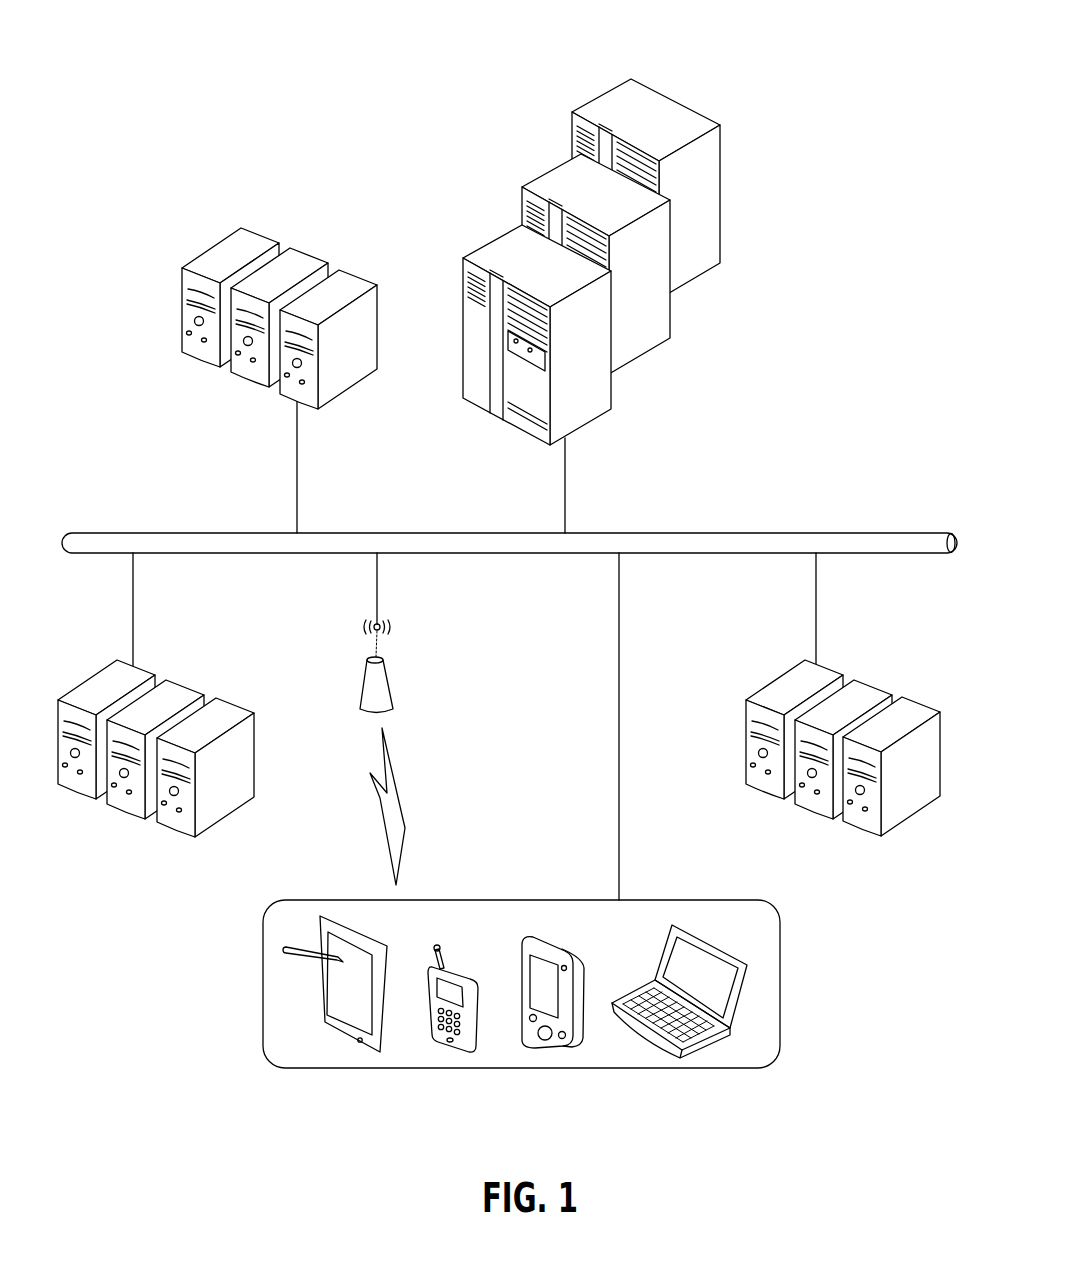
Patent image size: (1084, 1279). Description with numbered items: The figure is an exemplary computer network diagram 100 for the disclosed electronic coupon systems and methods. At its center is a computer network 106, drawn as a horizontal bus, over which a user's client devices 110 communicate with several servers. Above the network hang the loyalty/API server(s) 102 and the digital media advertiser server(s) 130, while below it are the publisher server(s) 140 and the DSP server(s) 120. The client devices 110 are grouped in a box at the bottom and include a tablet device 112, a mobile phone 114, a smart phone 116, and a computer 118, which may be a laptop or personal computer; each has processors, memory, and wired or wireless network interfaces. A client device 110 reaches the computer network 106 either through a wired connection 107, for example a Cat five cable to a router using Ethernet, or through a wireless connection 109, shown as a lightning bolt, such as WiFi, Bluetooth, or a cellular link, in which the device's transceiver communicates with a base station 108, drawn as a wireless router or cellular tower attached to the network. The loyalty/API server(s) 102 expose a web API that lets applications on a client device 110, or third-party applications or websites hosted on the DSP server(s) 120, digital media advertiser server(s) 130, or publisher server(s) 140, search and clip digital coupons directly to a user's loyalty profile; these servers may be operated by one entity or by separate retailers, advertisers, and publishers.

The computer network diagram 100 is at (462, 31).
The loyalty/API server(s) 102 is at (686, 98).
The computer network 106 is at (771, 531).
The wired connection 107 is at (621, 671).
The base station 108 is at (390, 684).
The wireless connection 109 is at (400, 793).
The client devices 110 is at (538, 898).
The tablet device 112 is at (355, 1045).
The mobile phone 114 is at (468, 1055).
The smart phone 116 is at (562, 1050).
The computer 118 is at (678, 1052).
The DSP server(s) 120 is at (872, 688).
The digital media advertiser server(s) 130 is at (258, 232).
The publisher server(s) 140 is at (190, 688).